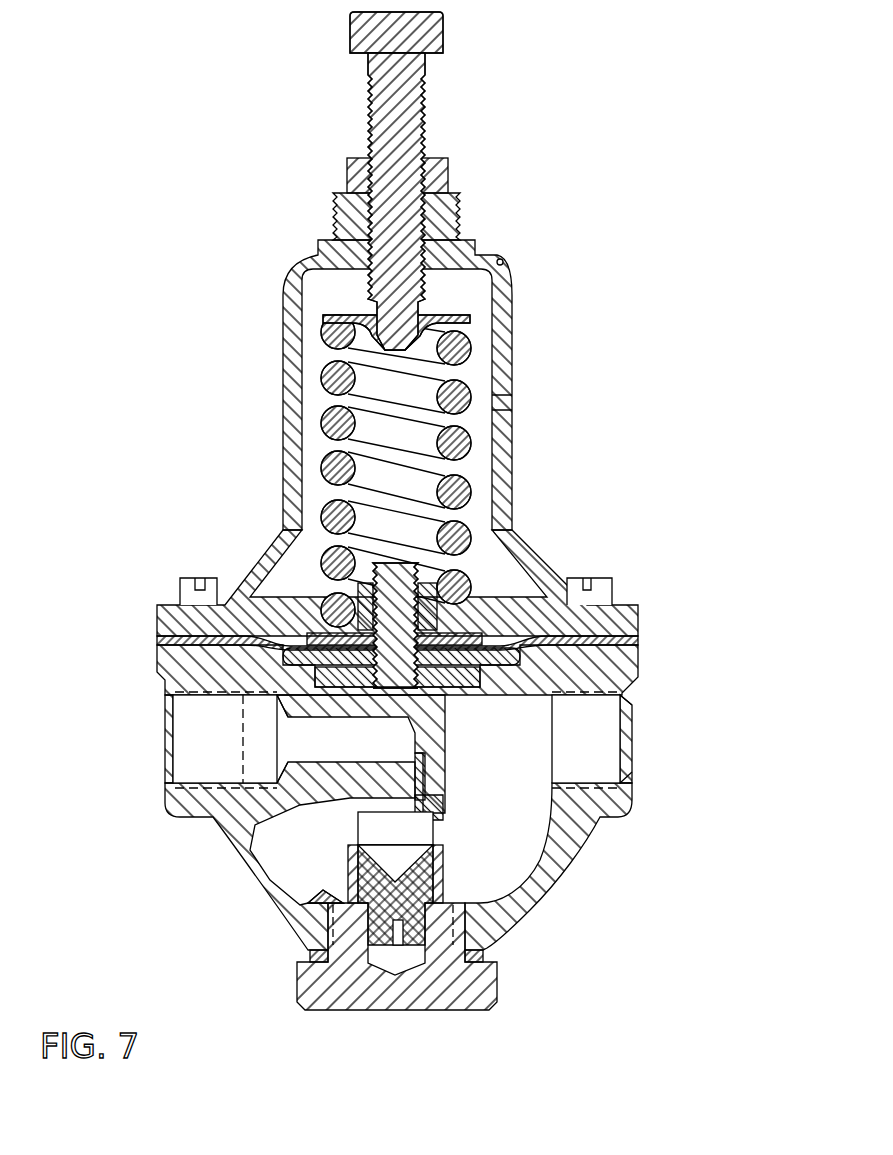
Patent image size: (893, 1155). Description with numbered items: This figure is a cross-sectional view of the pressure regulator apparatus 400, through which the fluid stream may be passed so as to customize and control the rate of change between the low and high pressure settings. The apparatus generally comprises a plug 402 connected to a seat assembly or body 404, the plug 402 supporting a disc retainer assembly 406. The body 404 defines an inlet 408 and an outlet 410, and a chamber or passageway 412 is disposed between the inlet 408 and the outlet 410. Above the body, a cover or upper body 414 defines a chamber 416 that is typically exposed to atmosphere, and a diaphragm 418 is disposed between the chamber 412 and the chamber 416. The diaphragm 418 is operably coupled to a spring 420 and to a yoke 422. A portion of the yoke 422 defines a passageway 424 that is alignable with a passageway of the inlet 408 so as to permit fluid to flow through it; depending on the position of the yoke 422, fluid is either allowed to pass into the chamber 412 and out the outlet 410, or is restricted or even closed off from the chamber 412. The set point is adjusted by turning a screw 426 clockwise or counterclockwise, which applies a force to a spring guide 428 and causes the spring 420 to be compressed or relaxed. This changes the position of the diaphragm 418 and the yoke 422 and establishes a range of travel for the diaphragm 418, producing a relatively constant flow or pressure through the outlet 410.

The pressure regulator apparatus 400 is at (144, 238).
The plug 402 is at (425, 1002).
The body 404 is at (520, 902).
The disc retainer assembly 406 is at (323, 893).
The inlet 408 is at (183, 737).
The outlet 410 is at (603, 745).
The chamber 412 is at (508, 853).
The upper body 414 is at (503, 453).
The chamber 416 is at (305, 567).
The diaphragm 418 is at (260, 640).
The spring 420 is at (325, 415).
The yoke 422 is at (397, 667).
The passageway 424 is at (372, 832).
The screw 426 is at (382, 103).
The spring guide 428 is at (455, 312).